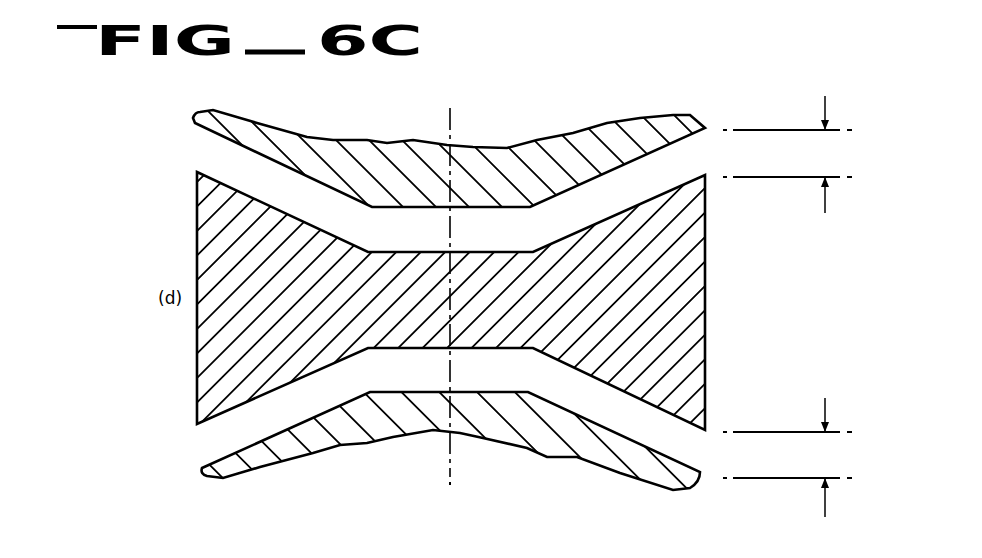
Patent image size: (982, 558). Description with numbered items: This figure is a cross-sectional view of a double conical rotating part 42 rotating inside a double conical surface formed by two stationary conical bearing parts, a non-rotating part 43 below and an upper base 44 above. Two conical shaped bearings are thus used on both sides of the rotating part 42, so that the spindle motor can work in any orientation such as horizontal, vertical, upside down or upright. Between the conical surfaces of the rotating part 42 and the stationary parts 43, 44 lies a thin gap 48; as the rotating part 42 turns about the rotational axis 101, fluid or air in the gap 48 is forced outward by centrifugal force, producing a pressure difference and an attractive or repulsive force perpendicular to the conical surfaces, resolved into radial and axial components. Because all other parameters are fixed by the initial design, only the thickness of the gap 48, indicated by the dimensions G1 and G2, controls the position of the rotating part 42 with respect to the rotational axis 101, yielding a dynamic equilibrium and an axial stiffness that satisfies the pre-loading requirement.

The rotating part 42 is at (696, 307).
The non-rotating part 43 is at (553, 445).
The upper base 44 is at (619, 134).
The gap 48 is at (212, 156).
The rotational axis 101 is at (447, 106).
The gap dimension G1 is at (825, 517).
The gap dimension G2 is at (825, 213).